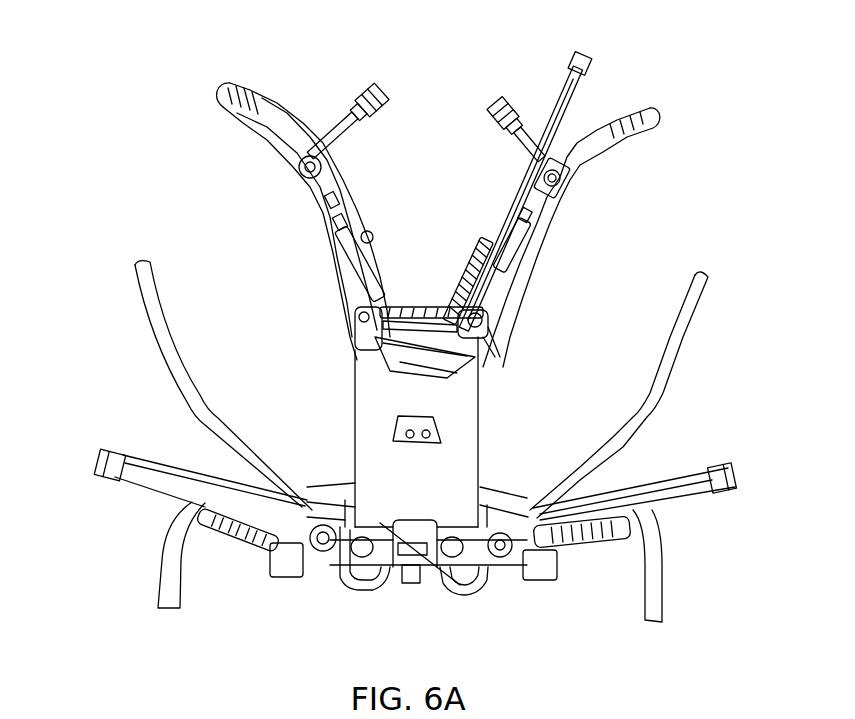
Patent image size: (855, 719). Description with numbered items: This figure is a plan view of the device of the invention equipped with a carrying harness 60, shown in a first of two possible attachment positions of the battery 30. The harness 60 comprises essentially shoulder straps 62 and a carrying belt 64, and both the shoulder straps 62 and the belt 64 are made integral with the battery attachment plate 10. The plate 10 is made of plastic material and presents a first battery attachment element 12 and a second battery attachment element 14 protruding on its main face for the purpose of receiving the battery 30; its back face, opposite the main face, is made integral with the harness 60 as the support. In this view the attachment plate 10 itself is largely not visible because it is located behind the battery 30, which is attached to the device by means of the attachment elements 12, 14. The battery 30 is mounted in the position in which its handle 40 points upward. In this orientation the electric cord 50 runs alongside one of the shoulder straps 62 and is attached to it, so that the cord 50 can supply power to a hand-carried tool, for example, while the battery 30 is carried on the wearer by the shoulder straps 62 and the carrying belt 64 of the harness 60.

The harness 60 is at (181, 163).
The shoulder straps 62 is at (483, 113).
The electric cord 50 is at (579, 87).
The handle 40 is at (485, 322).
The second battery attachment element 14 is at (482, 360).
The battery attachment plate 10 is at (420, 400).
The battery 30 is at (443, 465).
The carrying belt 64 is at (328, 497).
The first battery attachment element 12 is at (433, 523).